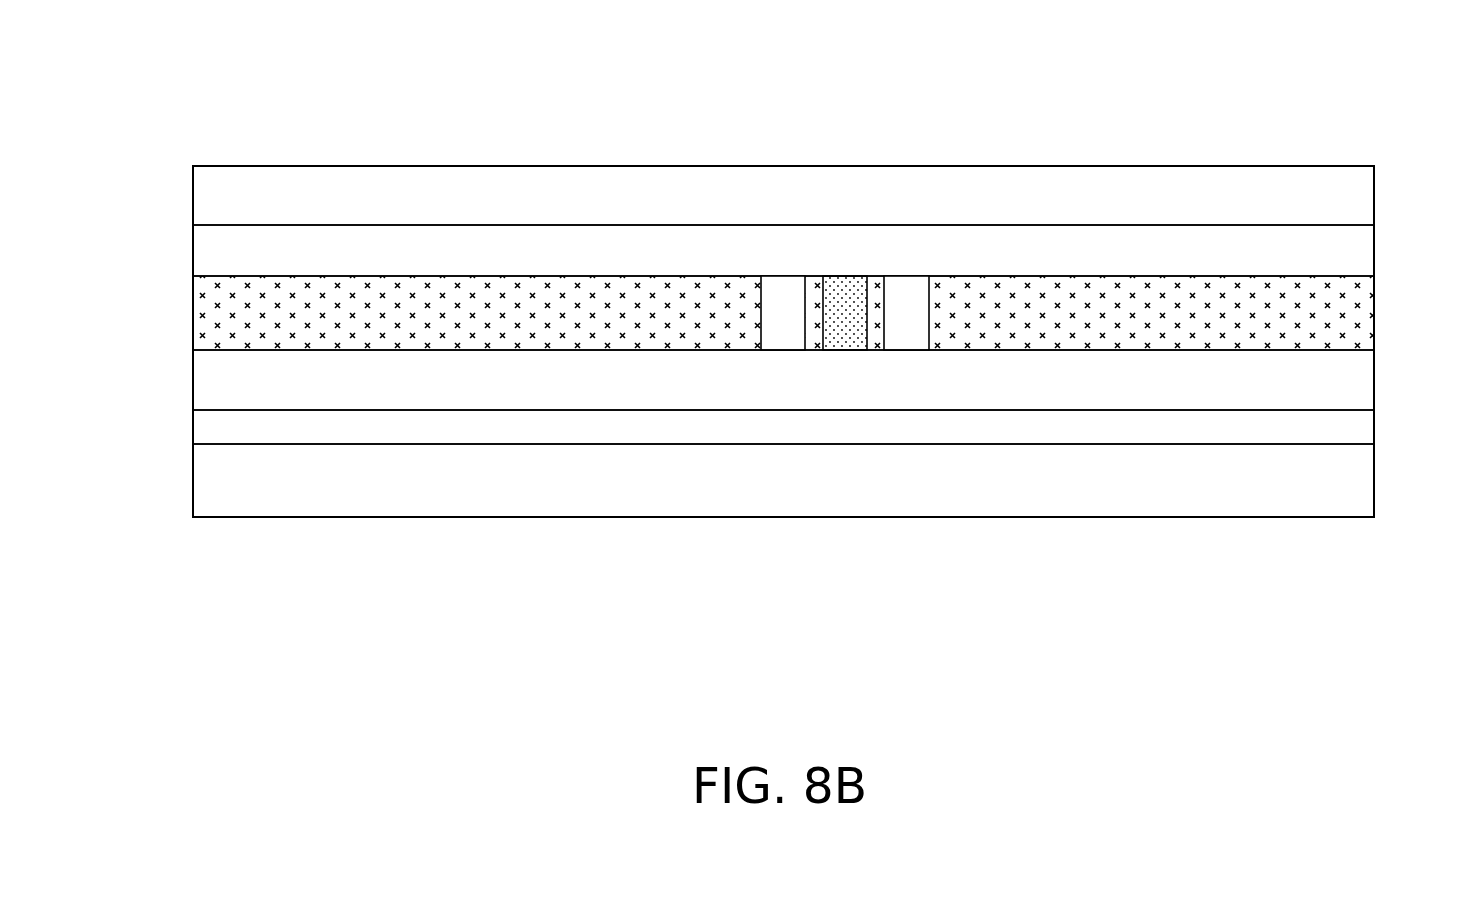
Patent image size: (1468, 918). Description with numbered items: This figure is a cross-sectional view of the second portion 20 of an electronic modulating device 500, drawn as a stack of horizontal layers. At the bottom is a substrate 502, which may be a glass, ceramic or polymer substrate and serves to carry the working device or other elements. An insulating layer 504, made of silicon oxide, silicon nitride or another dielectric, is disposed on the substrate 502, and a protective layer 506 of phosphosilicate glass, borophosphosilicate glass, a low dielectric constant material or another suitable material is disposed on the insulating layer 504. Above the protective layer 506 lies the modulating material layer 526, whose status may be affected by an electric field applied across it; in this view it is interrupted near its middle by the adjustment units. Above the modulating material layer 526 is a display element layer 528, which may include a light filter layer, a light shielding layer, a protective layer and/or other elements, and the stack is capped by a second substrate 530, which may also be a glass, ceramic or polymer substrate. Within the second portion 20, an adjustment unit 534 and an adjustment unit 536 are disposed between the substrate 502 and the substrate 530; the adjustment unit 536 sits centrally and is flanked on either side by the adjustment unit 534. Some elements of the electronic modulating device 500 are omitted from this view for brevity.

The electronic modulating device 500 is at (180, 80).
The second portion 20 is at (453, 152).
The substrate 502 is at (1366, 482).
The insulating layer 504 is at (1366, 427).
The protective layer 506 is at (1366, 380).
The modulating material layer 526 is at (1366, 313).
The display element layer 528 is at (1366, 240).
The substrate 530 is at (1366, 193).
The adjustment unit 534 is at (783, 292).
The adjustment unit 536 is at (847, 292).